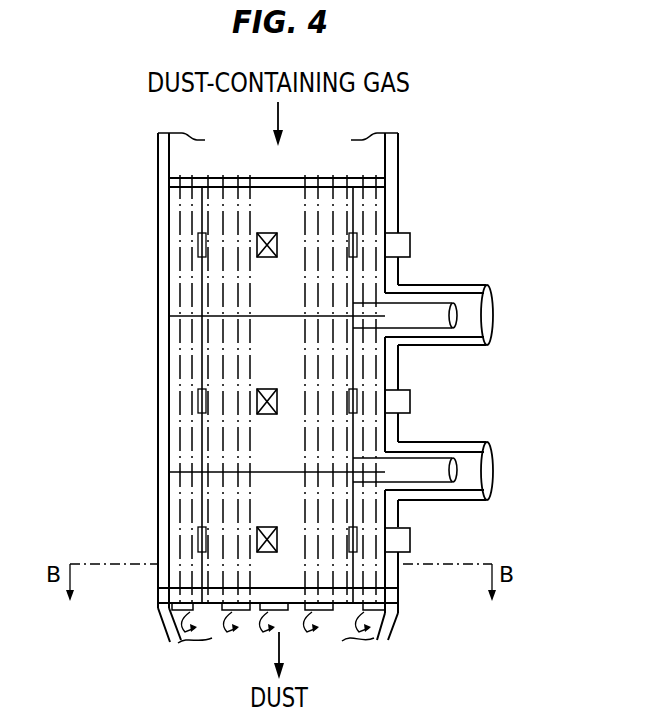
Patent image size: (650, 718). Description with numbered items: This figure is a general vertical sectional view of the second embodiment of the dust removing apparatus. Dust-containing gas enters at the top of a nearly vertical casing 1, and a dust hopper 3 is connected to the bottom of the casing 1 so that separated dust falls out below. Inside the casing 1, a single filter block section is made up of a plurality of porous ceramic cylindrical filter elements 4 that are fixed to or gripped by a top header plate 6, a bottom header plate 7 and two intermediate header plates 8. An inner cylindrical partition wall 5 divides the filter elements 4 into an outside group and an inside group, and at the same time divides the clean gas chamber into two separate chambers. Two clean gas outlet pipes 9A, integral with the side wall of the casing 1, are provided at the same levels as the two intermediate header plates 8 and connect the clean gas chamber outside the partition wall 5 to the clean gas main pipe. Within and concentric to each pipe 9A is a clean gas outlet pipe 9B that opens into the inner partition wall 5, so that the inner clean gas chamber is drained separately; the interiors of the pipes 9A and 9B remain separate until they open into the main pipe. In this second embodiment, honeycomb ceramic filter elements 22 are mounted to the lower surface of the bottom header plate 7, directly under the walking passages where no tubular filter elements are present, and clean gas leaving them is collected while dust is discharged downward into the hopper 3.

The casing 1 is at (398, 277).
The dust hopper 3 is at (394, 626).
The porous ceramic cylindrical filter elements 4 is at (372, 428).
The inner cylindrical partition wall 5 is at (353, 215).
The top header plate 6 is at (363, 180).
The bottom header plate 7 is at (380, 616).
The intermediate header plates 8 is at (188, 472).
The clean gas outlet pipes 9A is at (477, 285).
The clean gas outlet pipes 9B is at (432, 330).
The honeycomb ceramic filter elements 22 is at (280, 611).